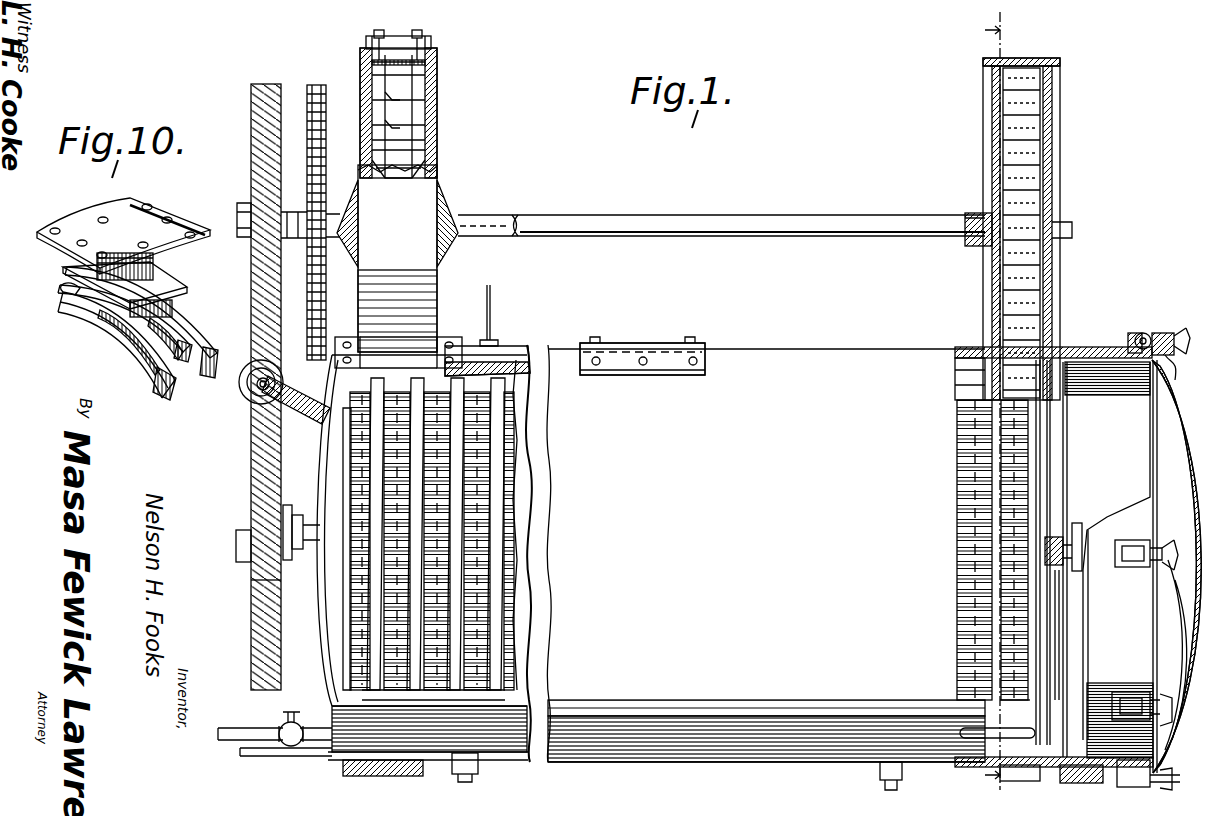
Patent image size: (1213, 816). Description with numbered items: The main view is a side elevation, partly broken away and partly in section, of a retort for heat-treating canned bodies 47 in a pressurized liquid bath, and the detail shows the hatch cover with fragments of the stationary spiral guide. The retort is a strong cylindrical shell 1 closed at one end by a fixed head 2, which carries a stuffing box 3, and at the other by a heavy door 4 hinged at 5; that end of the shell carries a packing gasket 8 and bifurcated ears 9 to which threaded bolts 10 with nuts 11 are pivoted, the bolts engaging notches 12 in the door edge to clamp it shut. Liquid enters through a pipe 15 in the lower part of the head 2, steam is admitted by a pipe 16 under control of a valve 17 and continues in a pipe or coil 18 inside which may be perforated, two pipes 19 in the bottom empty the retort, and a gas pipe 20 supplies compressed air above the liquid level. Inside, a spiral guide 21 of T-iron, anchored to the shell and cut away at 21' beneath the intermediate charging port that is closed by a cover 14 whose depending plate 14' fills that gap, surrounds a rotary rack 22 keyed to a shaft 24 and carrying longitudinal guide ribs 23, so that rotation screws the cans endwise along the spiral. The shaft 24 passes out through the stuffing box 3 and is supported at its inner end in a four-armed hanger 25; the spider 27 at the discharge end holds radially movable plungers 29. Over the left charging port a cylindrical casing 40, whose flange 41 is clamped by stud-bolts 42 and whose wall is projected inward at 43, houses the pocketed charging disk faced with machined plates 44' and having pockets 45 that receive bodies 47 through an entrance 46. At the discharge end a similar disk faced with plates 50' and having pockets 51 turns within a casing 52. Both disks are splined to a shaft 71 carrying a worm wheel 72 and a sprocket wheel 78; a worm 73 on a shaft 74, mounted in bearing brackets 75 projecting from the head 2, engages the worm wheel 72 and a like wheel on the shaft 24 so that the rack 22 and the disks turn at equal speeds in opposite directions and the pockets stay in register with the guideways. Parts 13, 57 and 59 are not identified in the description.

In FIG. 1, the cylindrical shell 1 is at (755, 553).
In FIG. 1, the fixed head 2 is at (318, 470).
In FIG. 1, the stuffing box 3 is at (1001, 401).
In FIG. 1, the door 4 is at (1190, 462).
In FIG. 1, the hinge 5 is at (300, 515).
In FIG. 1, the packing gasket 8 is at (1078, 571).
In FIG. 1, the bifurcated ears 9 is at (1140, 332).
In FIG. 1, the threaded bolts 10 is at (252, 590).
In FIG. 1, the nuts 11 is at (1187, 332).
In FIG. 1, the notches 12 is at (1172, 570).
In FIG. 1, the flange 13 is at (968, 348).
In FIG. 10, the cover 14 is at (122, 246).
In FIG. 1, the cover 14 is at (652, 342).
In FIG. 10, the depending plate 14' is at (138, 289).
In FIG. 1, the pipe 15 is at (238, 724).
In FIG. 1, the pipe 16 is at (258, 748).
In FIG. 1, the controlling valve 17 is at (290, 720).
In FIG. 1, the pipe or coil 18 is at (968, 732).
In FIG. 1, the pipes 19 is at (480, 770).
In FIG. 1, the gas pipe 20 is at (492, 312).
In FIG. 10, the spiral guide 21 is at (147, 334).
In FIG. 1, the spiral guide 21 is at (431, 502).
In FIG. 10, the cut-away flange portion 21' is at (125, 334).
In FIG. 1, the rotary rack 22 is at (394, 700).
In FIG. 1, the guide ribs 23 is at (386, 600).
In FIG. 1, the shaft 24 is at (1082, 540).
In FIG. 1, the shaft hanger 25 is at (1060, 462).
In FIG. 1, the spider 27 is at (1060, 608).
In FIG. 1, the plungers 29 is at (1020, 515).
In FIG. 1, the cylindrical casing 40 is at (397, 258).
In FIG. 1, the flange 41 is at (440, 340).
In FIG. 1, the stud-bolts 42 is at (470, 334).
In FIG. 1, the projected wall portion 43 is at (487, 361).
In FIG. 1, the plates 44' is at (425, 164).
In FIG. 1, the pockets 45 is at (414, 150).
In FIG. 1, the entrance 46 is at (438, 95).
In FIG. 1, the bodies 47 is at (436, 534).
In FIG. 1, the plates 50' is at (1041, 229).
In FIG. 1, the pockets 51 is at (1030, 118).
In FIG. 1, the casing 52 is at (1058, 170).
In FIG. 1, the bolt 57 is at (408, 36).
In FIG. 1, the cap 59 is at (432, 44).
In FIG. 1, the shaft 71 is at (582, 236).
In FIG. 1, the worm wheel 72 is at (256, 285).
In FIG. 1, the worm 73 is at (242, 390).
In FIG. 1, the shaft 74 is at (258, 392).
In FIG. 1, the bearing brackets 75 is at (306, 414).
In FIG. 1, the sprocket wheel 78 is at (312, 85).